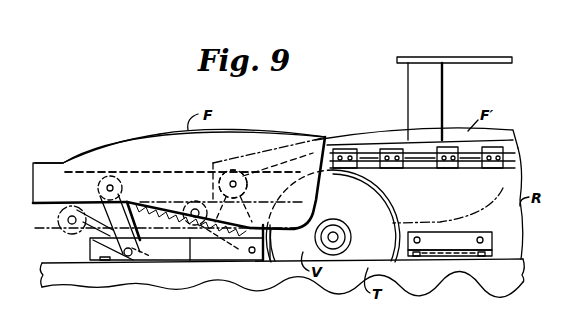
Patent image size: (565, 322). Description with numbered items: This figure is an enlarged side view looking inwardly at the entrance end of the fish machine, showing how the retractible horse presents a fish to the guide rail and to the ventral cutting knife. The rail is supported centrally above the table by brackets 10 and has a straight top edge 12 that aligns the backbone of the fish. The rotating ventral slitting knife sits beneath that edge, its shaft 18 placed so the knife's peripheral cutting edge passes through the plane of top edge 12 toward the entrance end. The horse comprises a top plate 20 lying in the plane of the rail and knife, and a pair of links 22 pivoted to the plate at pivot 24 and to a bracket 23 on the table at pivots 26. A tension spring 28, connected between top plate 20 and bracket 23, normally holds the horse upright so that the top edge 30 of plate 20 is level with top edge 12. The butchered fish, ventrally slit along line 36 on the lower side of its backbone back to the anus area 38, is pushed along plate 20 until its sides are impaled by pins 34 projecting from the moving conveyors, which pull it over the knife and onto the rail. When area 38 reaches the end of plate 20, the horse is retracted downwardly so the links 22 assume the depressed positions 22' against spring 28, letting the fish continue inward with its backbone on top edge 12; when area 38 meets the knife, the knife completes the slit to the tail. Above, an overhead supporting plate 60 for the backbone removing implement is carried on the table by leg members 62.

The brackets 10 is at (450, 242).
The top edge 12 is at (492, 176).
The shaft 18 is at (336, 237).
The top plate 20 is at (190, 152).
The links 22 is at (199, 218).
The depressed positions of links 22' is at (79, 232).
The bracket 23 is at (213, 250).
The pivot 24 is at (256, 171).
The pivots 26 is at (130, 256).
The tension spring 28 is at (182, 256).
The top edge 30 is at (133, 163).
The pins 34 is at (390, 146).
The line 36 is at (165, 160).
The anus area 38 is at (63, 160).
The overhead supporting plate 60 is at (472, 57).
The leg members 62 is at (440, 86).